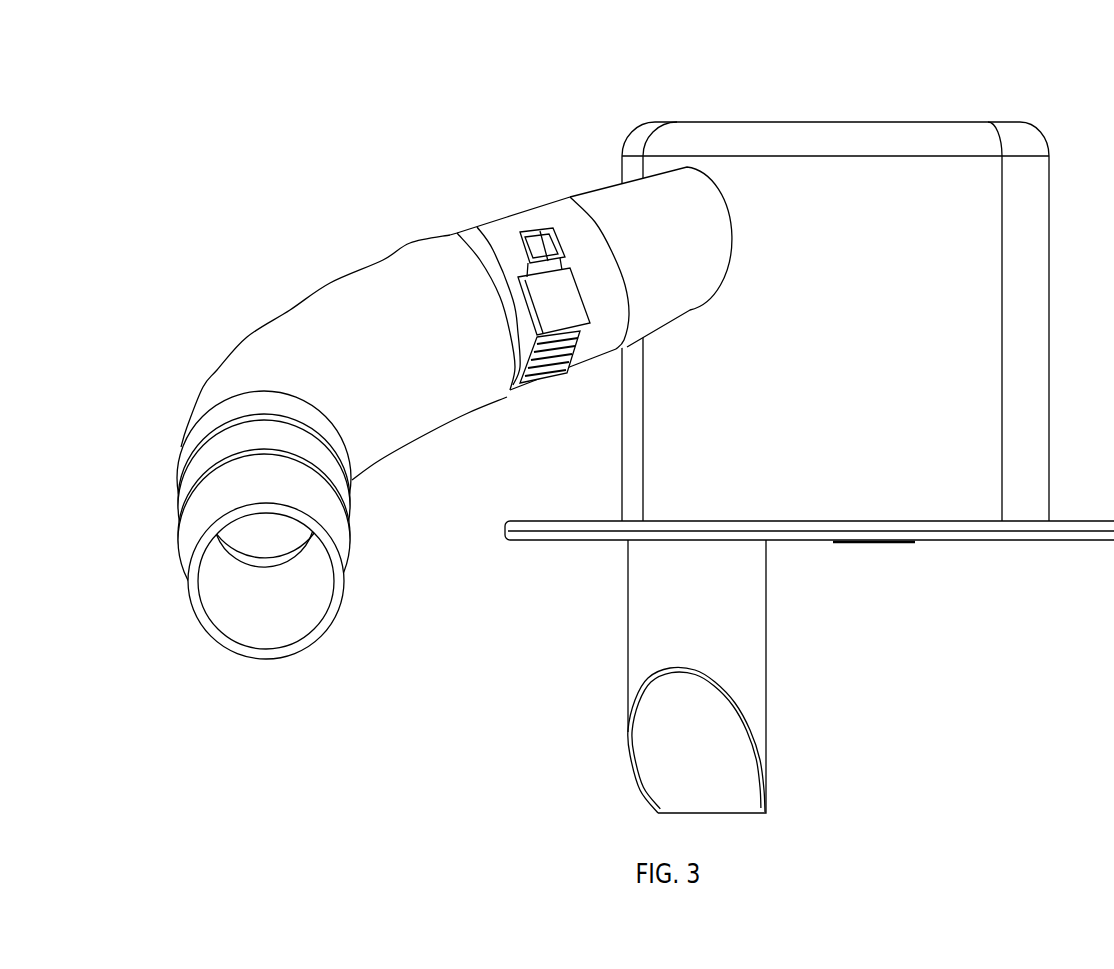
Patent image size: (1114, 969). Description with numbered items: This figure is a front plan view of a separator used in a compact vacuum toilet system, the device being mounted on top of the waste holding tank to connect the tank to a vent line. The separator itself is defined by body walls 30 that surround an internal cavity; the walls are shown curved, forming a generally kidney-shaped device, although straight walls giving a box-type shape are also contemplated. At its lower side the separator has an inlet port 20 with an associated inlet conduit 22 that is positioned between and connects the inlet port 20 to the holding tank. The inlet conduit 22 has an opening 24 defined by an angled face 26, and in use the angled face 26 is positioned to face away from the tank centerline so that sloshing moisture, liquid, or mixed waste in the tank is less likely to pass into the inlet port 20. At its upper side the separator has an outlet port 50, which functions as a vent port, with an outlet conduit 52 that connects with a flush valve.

The inlet port 20 is at (653, 541).
The inlet conduit 22 is at (708, 620).
The opening 24 is at (697, 737).
The angled face 26 is at (628, 740).
The body walls 30 is at (837, 335).
The outlet port 50 is at (707, 173).
The outlet conduit 52 is at (370, 359).